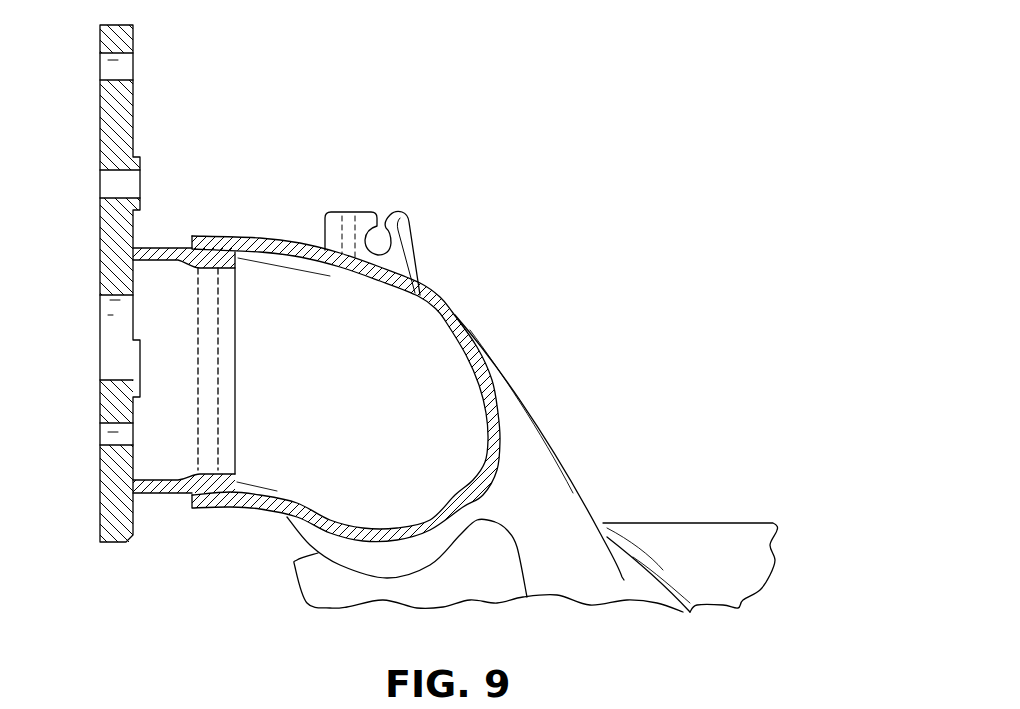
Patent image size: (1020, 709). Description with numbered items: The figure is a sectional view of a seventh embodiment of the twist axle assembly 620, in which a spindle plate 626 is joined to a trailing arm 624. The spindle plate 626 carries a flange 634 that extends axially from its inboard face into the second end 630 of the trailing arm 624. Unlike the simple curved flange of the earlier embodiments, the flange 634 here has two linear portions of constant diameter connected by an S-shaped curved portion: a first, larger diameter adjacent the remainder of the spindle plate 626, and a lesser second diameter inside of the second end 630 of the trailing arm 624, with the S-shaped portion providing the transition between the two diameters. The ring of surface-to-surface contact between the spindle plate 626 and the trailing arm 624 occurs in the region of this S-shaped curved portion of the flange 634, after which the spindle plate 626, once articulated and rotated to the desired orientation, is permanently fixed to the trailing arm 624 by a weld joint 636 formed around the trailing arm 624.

The twist axle assembly 620 is at (484, 383).
The trailing arm 624 is at (558, 440).
The spindle plate 626 is at (135, 117).
The second end 630 is at (230, 236).
The flange 634 is at (162, 496).
The upper flange 636 is at (138, 241).